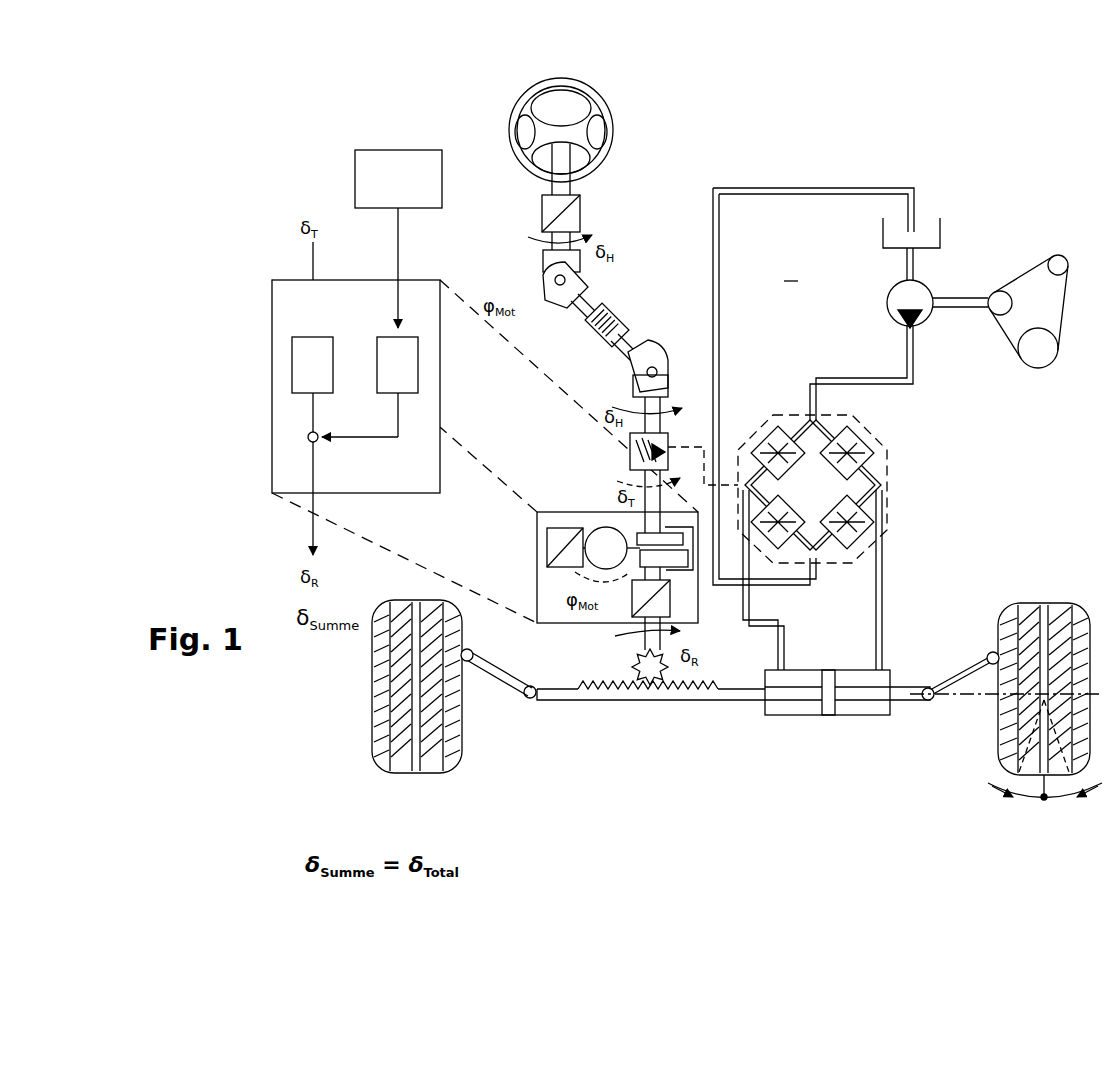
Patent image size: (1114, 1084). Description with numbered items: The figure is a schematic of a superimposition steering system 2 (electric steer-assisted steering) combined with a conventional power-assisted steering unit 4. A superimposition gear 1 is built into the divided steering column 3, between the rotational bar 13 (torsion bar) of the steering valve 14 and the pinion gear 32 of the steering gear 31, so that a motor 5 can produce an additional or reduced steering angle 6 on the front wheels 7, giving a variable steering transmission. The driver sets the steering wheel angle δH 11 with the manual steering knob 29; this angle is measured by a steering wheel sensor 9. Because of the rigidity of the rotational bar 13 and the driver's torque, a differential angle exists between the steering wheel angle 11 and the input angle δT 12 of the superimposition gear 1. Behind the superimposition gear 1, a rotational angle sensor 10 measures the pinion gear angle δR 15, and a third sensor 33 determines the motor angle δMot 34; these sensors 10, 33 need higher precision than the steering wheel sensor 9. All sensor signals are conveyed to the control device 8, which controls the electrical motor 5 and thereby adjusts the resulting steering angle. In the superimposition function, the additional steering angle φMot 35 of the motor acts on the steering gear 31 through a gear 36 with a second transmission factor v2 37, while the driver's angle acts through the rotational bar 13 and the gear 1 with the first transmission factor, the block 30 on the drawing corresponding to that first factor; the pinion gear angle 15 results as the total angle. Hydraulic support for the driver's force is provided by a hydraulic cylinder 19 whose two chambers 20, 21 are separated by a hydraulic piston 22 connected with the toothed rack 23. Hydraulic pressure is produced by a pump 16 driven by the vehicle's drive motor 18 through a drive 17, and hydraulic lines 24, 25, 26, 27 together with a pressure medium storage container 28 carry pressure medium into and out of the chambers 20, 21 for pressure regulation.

The superimposition gear 1 is at (603, 566).
The superimposition steering system 2 is at (450, 451).
The divided steering column 3 is at (574, 385).
The power-assisted steering unit 4 is at (890, 390).
The motor 5 is at (600, 528).
The steering angle 6 is at (1030, 798).
The front wheels 7 is at (462, 705).
The control device 8 is at (355, 162).
The steering wheel sensor 9 is at (582, 205).
The rotational angle sensor 10 is at (668, 596).
The steering wheel angle δH 11 is at (530, 239).
The input angle δT 12 is at (313, 258).
The rotational bar 13 is at (630, 455).
The steering valve 14 is at (890, 462).
The pinion gear angle δR 15 is at (313, 515).
The pump 16 is at (927, 322).
The drive 17 is at (985, 290).
The drive motor 18 is at (1008, 352).
The hydraulic cylinder 19 is at (813, 699).
The chamber 20 is at (787, 717).
The chamber 21 is at (868, 717).
The hydraulic piston 22 is at (828, 717).
The toothed rack 23 is at (752, 700).
The hydraulic line 24 is at (888, 570).
The hydraulic line 25 is at (750, 603).
The hydraulic line 26 is at (803, 188).
The hydraulic line 27 is at (843, 378).
The pressure medium storage container 28 is at (942, 232).
The manual steering knob 29 is at (612, 110).
The gain block 30 is at (292, 363).
The steering gear 31 is at (648, 706).
The pinion gear 32 is at (631, 667).
The third sensor 33 is at (547, 547).
The motor angle δMot 34 is at (547, 562).
The additional steering angle φMot 35 is at (398, 225).
The gear 36 is at (688, 540).
The second transmission factor v2 37 is at (418, 363).